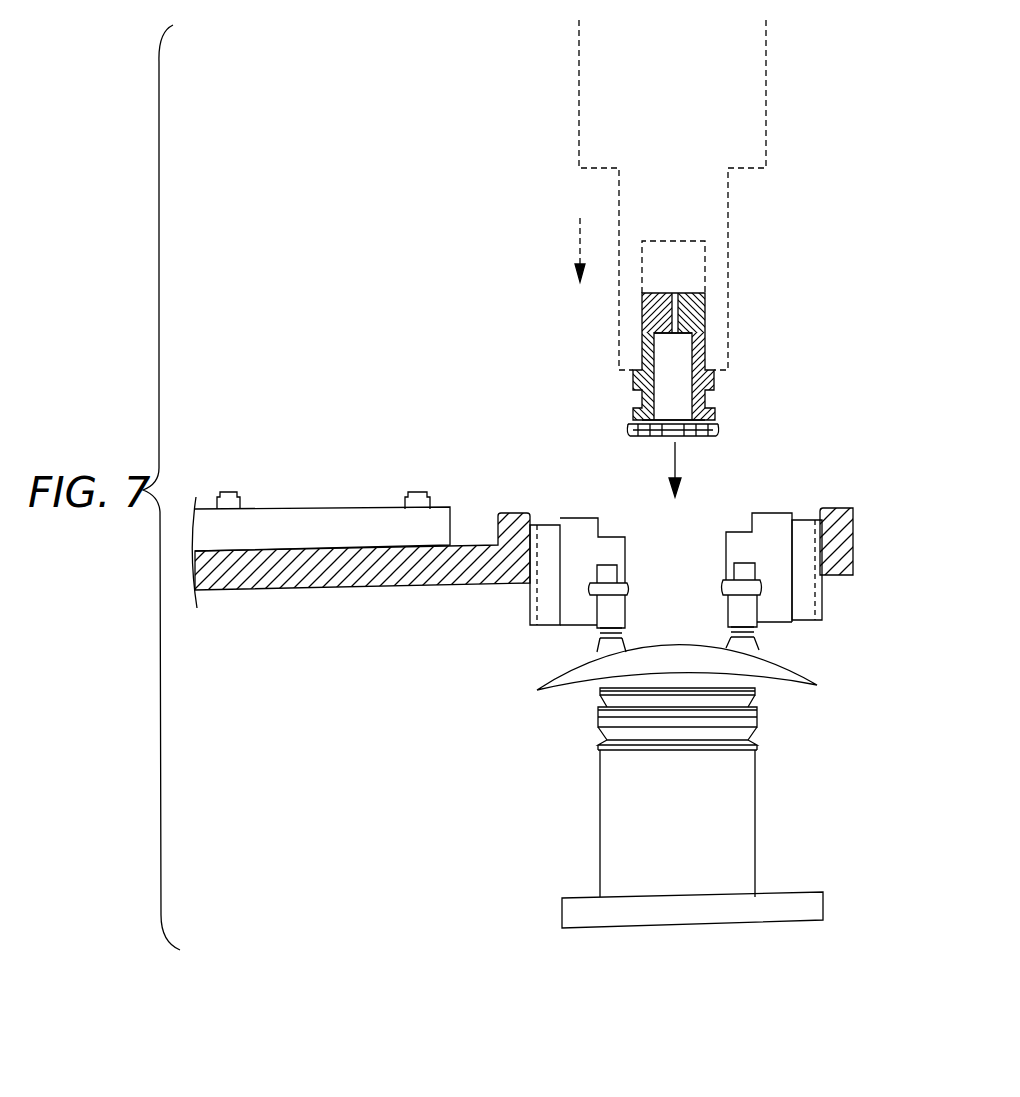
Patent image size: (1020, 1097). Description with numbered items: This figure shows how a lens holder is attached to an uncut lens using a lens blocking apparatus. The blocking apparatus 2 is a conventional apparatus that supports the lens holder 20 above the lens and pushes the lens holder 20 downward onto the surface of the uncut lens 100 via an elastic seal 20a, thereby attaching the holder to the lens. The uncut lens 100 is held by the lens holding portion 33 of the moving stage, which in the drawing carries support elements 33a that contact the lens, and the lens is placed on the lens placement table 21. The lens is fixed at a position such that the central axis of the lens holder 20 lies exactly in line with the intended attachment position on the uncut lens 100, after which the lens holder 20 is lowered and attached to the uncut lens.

The blocking apparatus 2 is at (766, 93).
The lens holder 20 is at (714, 378).
The elastic seal 20a is at (718, 430).
The lens holding portion 33 is at (365, 590).
The support pins 33a is at (600, 646).
The uncut lens 100 is at (800, 670).
The lens placement table 21 is at (600, 812).